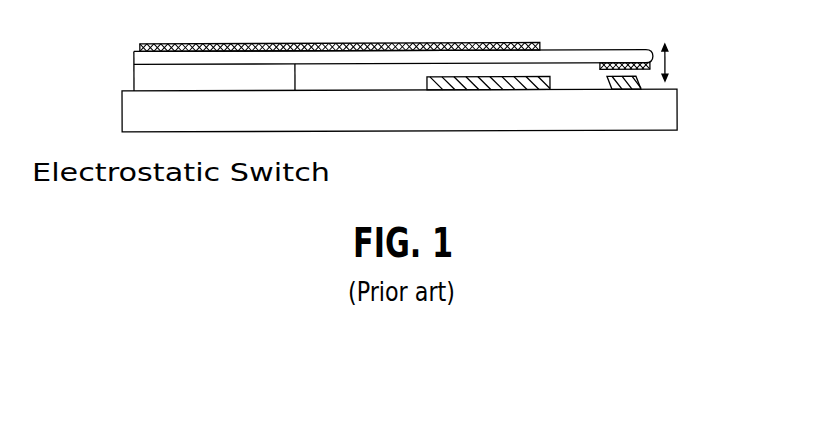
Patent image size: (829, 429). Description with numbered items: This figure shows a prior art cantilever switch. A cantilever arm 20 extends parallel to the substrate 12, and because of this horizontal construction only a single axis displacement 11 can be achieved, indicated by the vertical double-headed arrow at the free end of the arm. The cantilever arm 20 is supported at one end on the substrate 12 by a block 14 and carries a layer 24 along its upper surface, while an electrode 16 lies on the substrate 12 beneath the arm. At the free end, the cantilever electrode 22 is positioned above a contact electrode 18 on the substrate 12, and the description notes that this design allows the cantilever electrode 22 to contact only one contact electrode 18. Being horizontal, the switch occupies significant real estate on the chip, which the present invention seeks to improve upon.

The single axis displacement 11 is at (670, 63).
The substrate 12 is at (172, 121).
The anchor / support 14 is at (214, 71).
The actuation electrode 16 is at (427, 86).
The contact electrode 18 is at (626, 92).
The cantilever arm 20 is at (563, 50).
The cantilever electrode 22 is at (619, 50).
The top layer / electrode 24 is at (297, 43).